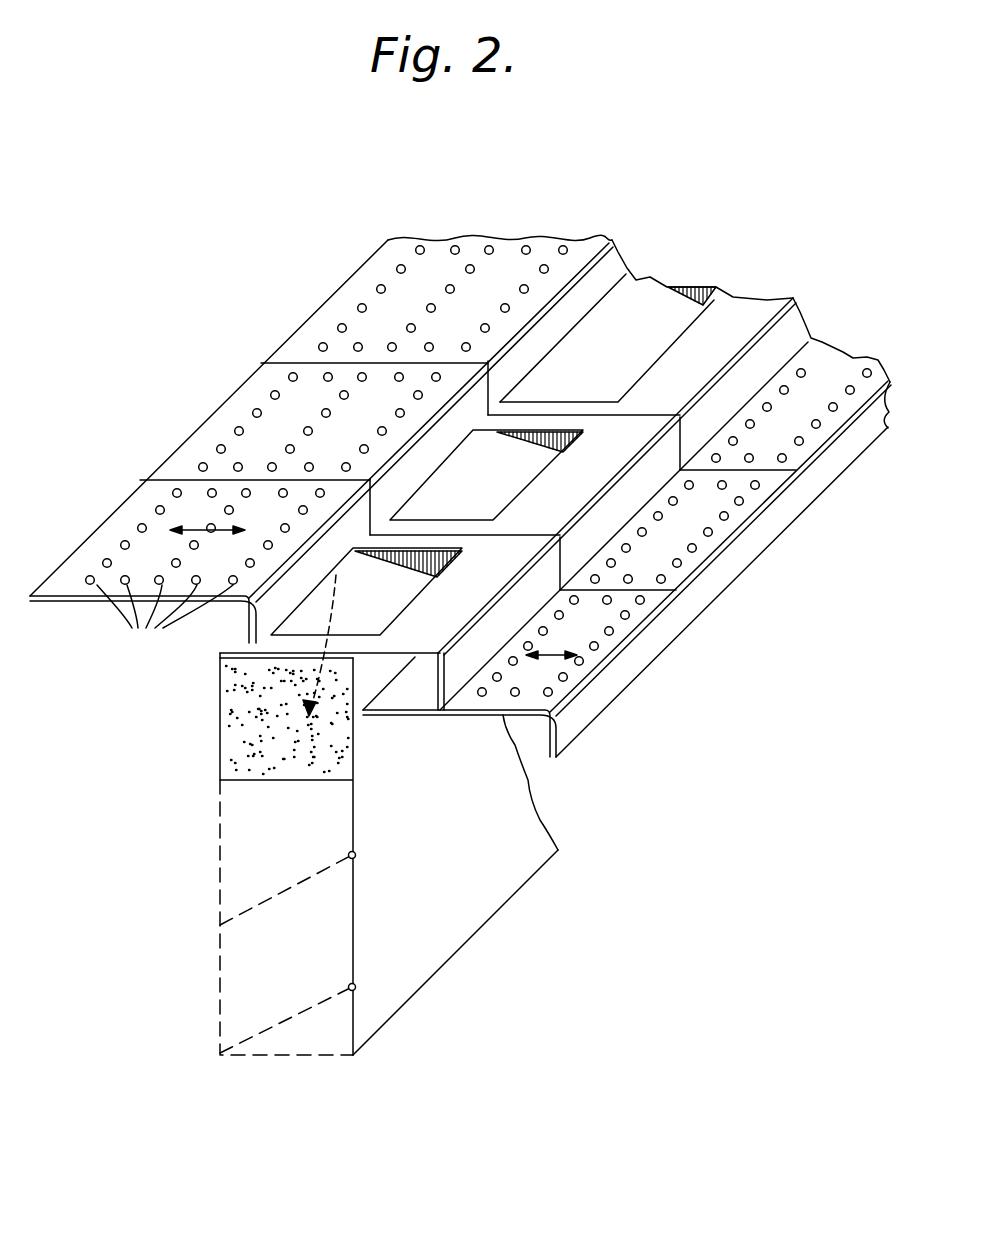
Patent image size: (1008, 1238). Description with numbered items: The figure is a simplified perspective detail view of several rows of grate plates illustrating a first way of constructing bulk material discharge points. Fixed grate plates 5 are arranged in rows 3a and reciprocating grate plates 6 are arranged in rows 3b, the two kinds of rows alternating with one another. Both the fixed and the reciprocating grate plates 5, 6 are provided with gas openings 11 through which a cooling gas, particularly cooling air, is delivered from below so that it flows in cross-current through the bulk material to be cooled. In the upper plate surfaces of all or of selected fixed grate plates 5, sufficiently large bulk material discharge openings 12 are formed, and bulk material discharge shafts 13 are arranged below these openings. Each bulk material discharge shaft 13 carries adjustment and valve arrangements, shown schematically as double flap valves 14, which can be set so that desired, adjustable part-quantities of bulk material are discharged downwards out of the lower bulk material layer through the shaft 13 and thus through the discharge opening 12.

The row of fixed grate plates 3a is at (706, 285).
The row of reciprocating grate plates 3b is at (505, 232).
The fixed grate plate 5 is at (766, 310).
The reciprocating grate plate 6 is at (336, 304).
The gas openings 11 is at (165, 628).
The bulk material discharge opening 12 is at (672, 343).
The bulk material discharge shaft 13 is at (247, 741).
The double flap valves 14 is at (265, 903).